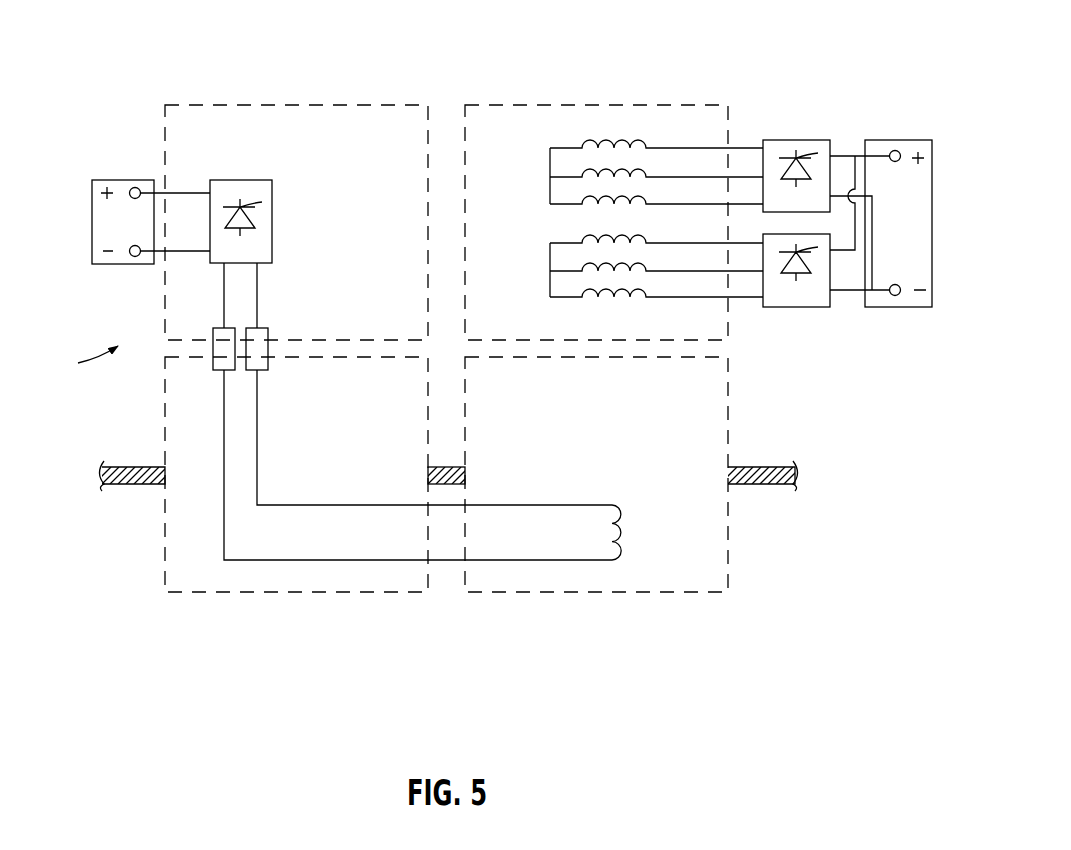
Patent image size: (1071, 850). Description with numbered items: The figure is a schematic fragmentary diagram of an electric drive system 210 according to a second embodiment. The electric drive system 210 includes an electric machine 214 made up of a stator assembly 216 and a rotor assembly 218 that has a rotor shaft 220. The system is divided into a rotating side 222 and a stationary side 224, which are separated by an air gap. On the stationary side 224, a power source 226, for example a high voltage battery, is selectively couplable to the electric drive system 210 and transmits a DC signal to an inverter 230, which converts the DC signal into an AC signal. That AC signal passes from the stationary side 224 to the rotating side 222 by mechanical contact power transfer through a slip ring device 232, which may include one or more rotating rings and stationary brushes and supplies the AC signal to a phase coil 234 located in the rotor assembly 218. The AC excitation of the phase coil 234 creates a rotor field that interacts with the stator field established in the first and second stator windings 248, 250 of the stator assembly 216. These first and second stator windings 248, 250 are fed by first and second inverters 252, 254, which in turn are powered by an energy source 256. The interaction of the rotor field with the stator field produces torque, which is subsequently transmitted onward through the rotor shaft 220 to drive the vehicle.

The electric drive system 210 is at (229, 305).
The electric machine 214 is at (640, 310).
The stator assembly 216 is at (663, 104).
The rotor assembly 218 is at (730, 420).
The rotor shaft 220 is at (138, 486).
The rotating side 222 is at (118, 333).
The stationary side 224 is at (118, 371).
The power source 226 is at (124, 178).
The inverter 230 is at (245, 178).
The slip ring device 232 is at (240, 372).
The phase coil 234 is at (626, 531).
The first stator winding 248 is at (590, 136).
The second stator winding 250 is at (609, 301).
The first inverter 252 is at (795, 139).
The second inverter 254 is at (795, 308).
The energy source 256 is at (880, 139).